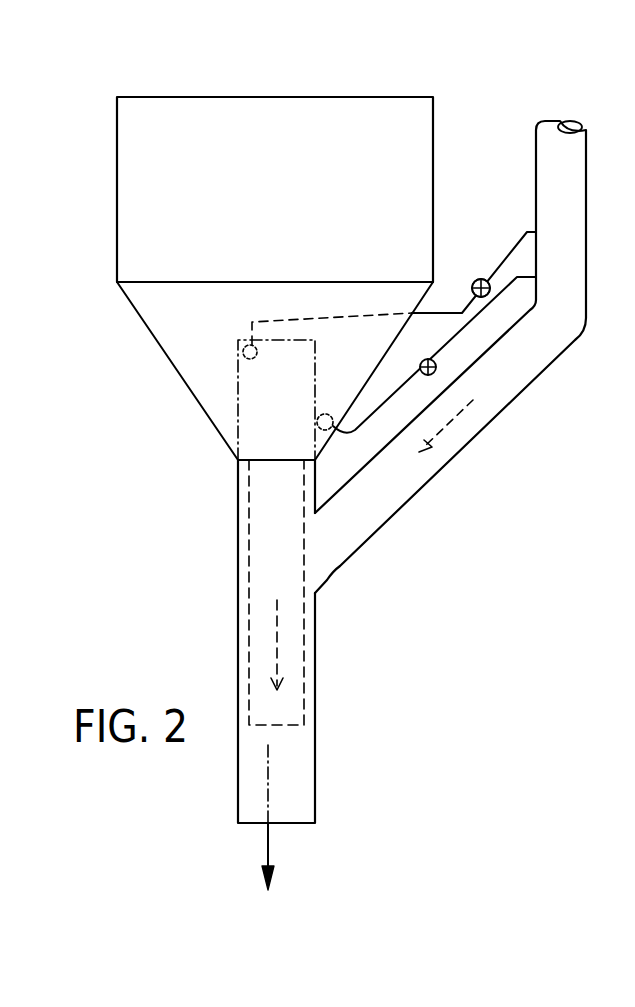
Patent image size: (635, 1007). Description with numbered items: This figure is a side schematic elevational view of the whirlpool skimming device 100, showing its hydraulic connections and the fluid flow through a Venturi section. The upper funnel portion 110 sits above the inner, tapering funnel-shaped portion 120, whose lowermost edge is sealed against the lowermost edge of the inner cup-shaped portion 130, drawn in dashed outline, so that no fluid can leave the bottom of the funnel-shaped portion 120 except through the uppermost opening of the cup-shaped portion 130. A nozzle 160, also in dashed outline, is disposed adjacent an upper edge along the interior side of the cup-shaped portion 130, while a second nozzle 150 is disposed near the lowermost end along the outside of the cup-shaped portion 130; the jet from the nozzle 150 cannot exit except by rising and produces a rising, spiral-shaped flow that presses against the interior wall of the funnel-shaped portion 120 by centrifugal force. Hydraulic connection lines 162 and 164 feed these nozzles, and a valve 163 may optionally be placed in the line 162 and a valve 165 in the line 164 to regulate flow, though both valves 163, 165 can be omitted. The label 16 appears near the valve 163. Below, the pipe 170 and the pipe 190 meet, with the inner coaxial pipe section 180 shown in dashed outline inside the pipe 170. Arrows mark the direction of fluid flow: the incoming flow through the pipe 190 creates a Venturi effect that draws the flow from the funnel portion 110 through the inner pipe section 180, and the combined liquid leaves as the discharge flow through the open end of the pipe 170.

The whirlpool skimming device 100 is at (338, 58).
The funnel portion 110 is at (117, 143).
The inner, tapering funnel-shaped portion 120 is at (142, 324).
The inner cup-shaped portion 130 is at (238, 394).
The nozzle 150 is at (327, 408).
The nozzle 160 is at (258, 356).
The hydraulic connection line 162 is at (508, 251).
The valve 163 is at (478, 278).
The valve 16 is at (466, 275).
The hydraulic connection line 164 is at (485, 312).
The valve 165 is at (420, 364).
The pipe 170 is at (240, 548).
The inner coaxial pipe section 180 is at (249, 576).
The pipe 190 is at (570, 190).